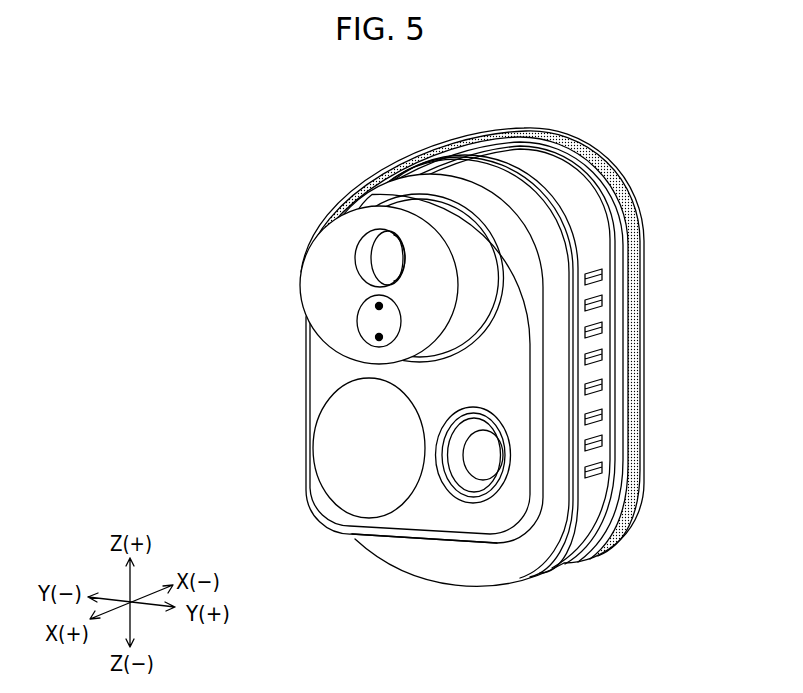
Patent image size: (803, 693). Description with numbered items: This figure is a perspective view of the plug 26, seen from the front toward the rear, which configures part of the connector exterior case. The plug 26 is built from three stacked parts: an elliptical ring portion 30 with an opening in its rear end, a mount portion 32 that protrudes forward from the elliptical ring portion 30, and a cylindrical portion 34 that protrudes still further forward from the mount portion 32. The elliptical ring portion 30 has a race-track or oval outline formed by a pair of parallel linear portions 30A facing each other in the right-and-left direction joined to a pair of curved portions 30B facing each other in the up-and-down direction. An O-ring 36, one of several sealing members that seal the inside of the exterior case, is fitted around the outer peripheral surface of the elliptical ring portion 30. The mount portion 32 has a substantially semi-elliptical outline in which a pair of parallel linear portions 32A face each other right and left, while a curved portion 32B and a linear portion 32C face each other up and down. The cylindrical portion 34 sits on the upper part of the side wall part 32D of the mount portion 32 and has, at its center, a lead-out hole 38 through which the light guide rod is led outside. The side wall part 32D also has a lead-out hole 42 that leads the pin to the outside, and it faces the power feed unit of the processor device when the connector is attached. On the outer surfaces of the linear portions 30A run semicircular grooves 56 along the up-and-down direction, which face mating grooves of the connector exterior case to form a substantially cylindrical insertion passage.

The plug 26 is at (628, 70).
The elliptical ring portion 30 is at (522, 136).
The linear portion 30A is at (648, 292).
The curved portion 30B is at (545, 130).
The mount portion 32 is at (552, 250).
The linear portion 32A is at (555, 432).
The curved portion 32B is at (453, 165).
The linear portion 32C is at (417, 539).
The side wall part 32D is at (435, 384).
The cylindrical portion 34 is at (333, 250).
The O-ring 36 is at (608, 177).
The lead-out hole 38 is at (378, 257).
The lead-out hole 42 is at (484, 458).
The semicircular groove 56 is at (598, 390).